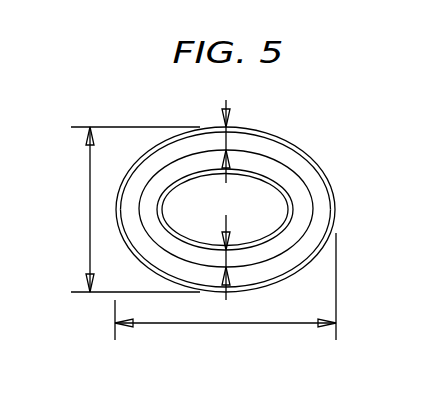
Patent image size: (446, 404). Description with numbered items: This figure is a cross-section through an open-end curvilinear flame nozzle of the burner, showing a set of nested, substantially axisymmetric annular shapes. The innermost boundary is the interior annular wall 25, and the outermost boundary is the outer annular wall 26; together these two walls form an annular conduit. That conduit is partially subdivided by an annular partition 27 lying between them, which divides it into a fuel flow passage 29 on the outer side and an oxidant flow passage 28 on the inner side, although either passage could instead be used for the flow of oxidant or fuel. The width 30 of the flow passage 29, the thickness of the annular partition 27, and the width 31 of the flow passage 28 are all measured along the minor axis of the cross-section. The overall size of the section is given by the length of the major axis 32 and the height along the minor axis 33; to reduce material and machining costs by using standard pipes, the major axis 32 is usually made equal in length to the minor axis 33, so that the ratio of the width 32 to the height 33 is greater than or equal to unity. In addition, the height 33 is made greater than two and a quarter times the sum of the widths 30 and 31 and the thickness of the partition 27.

The interior annular wall 25 is at (163, 212).
The outer annular wall 26 is at (337, 208).
The annular partition 27 is at (282, 162).
The oxidant flow passage 28 is at (295, 185).
The fuel flow passage 29 is at (297, 250).
The width of the flow passage 30 is at (225, 142).
The width of the flow passage 31 is at (225, 260).
The major axis 32 is at (226, 323).
The minor axis 33 is at (90, 208).